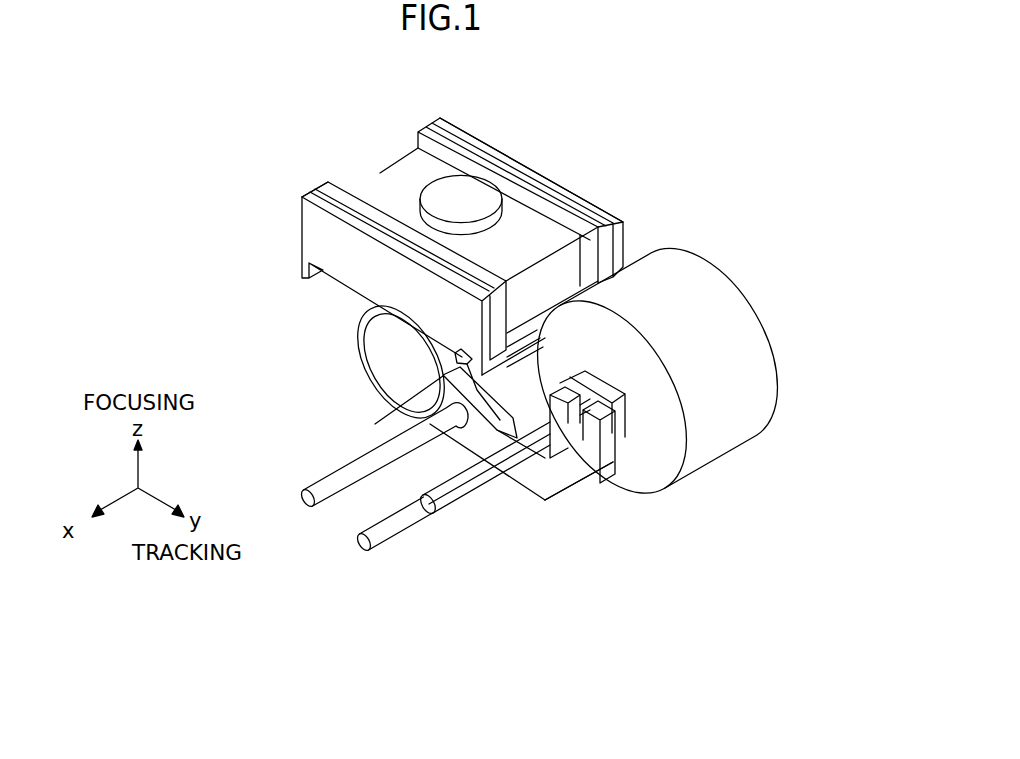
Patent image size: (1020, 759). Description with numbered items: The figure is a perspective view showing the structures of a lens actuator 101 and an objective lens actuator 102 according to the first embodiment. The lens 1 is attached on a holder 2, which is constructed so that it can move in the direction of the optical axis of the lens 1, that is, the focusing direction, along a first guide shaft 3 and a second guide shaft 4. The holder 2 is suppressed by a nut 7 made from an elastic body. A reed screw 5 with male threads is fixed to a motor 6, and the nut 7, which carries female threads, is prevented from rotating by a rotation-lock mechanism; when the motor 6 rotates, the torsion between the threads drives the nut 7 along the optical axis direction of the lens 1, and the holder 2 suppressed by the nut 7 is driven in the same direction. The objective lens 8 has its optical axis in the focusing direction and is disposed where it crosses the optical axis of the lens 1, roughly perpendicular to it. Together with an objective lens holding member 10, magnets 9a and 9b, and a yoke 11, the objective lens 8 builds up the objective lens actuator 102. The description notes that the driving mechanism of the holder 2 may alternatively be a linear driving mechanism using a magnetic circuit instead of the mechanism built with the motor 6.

The lens 1 is at (393, 375).
The holder 2 is at (557, 482).
The first guide shaft 3 is at (397, 530).
The second guide shaft 4 is at (328, 492).
The reed screw 5 is at (453, 490).
The motor 6 is at (745, 425).
The nut 7 is at (623, 413).
The objective lens 8 is at (481, 192).
The magnet 9a is at (595, 223).
The magnet 9b is at (327, 188).
The objective lens holding member 10 is at (390, 180).
The yoke 11 is at (315, 247).
The lens actuator 101 is at (688, 530).
The objective lens actuator 102 is at (673, 152).